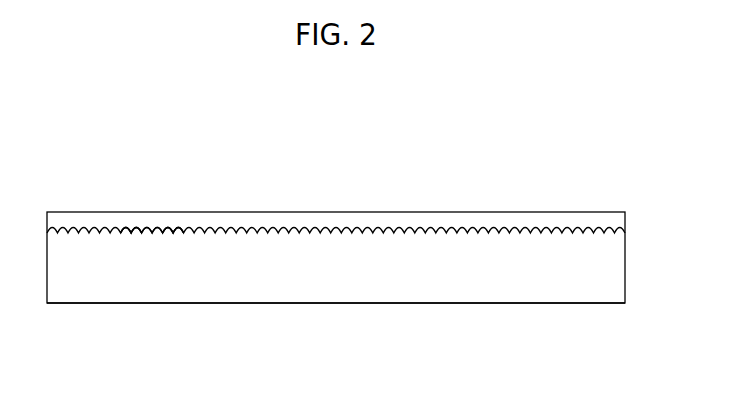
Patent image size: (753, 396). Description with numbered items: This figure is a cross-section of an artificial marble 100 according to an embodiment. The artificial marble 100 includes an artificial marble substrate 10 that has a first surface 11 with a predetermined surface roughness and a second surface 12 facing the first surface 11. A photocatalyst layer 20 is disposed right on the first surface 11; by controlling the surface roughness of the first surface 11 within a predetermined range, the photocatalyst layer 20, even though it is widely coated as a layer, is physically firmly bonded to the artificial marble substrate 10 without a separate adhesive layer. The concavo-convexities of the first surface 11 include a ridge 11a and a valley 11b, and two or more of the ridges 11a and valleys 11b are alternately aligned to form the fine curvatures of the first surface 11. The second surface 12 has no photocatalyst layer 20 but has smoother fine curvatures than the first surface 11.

The artificial marble 100 is at (365, 128).
The artificial marble substrate 10 is at (615, 263).
The first surface 11 is at (183, 170).
The ridge 11a is at (129, 231).
The valley 11b is at (167, 231).
The second surface 12 is at (325, 304).
The photocatalyst layer 20 is at (568, 222).